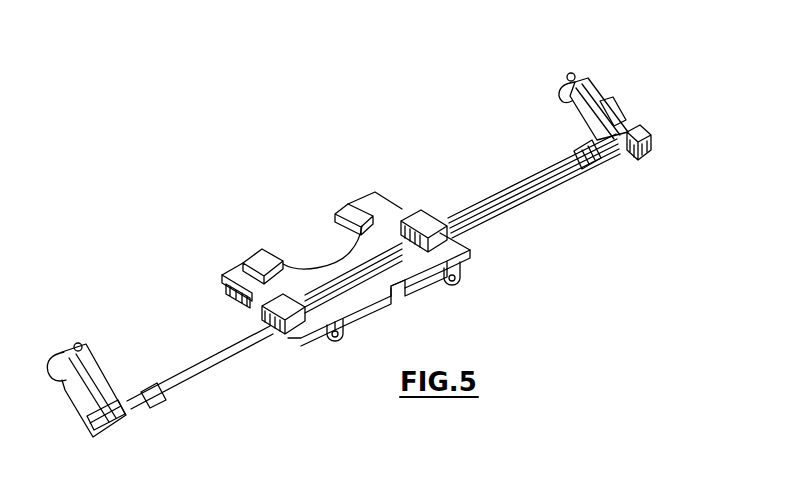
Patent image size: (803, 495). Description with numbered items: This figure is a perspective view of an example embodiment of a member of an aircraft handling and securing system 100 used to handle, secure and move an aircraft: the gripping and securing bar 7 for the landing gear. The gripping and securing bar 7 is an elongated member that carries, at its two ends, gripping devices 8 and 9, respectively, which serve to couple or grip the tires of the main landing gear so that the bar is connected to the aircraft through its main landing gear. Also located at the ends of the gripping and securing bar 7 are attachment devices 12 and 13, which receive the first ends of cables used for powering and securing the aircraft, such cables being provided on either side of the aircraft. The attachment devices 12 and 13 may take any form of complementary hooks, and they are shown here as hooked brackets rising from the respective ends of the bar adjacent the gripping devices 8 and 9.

The aircraft handling and securing system 100 is at (352, 124).
The gripping and securing bar 7 is at (478, 184).
The gripping device 8 is at (625, 165).
The gripping device 9 is at (150, 418).
The attachment device 12 is at (598, 82).
The attachment device 13 is at (50, 350).